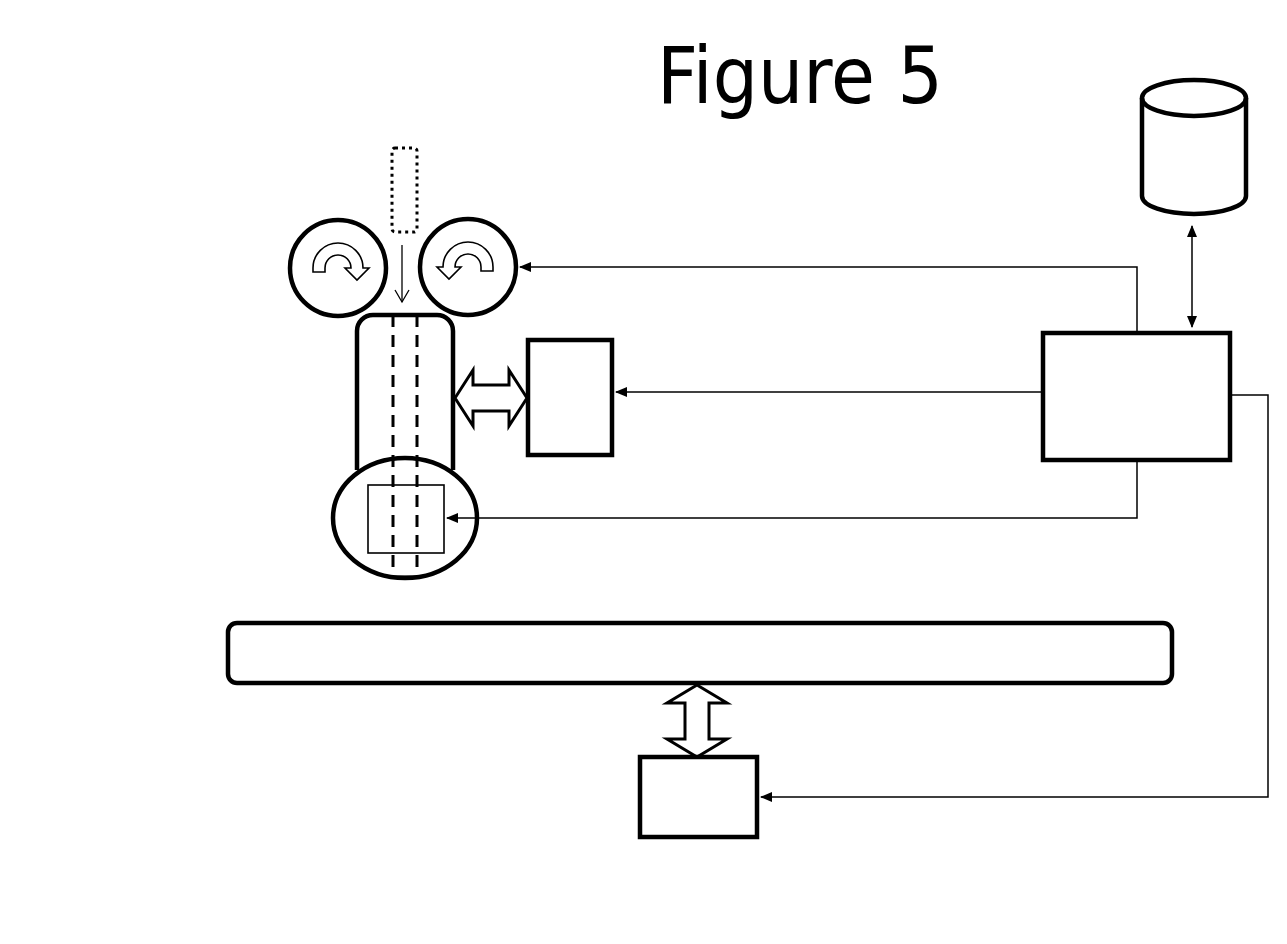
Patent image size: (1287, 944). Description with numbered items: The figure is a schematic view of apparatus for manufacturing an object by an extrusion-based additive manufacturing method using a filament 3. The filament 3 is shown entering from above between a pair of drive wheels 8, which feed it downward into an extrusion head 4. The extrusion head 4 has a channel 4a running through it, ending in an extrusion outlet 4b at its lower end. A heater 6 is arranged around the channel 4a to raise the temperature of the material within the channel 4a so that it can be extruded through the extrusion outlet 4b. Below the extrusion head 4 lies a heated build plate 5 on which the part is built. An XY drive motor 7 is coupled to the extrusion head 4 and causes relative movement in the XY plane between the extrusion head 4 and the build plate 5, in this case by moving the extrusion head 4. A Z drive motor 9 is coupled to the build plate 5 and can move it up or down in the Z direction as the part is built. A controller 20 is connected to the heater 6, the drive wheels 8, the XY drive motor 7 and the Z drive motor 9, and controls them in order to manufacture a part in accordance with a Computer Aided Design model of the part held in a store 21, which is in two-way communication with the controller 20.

The filament 3 is at (404, 195).
The extrusion head 4 is at (348, 502).
The channel 4a is at (405, 377).
The extrusion outlet 4b is at (407, 580).
The heated build plate 5 is at (245, 648).
The heater 6 is at (433, 542).
The XY drive motor 7 is at (533, 397).
The drive wheels 8 is at (312, 243).
The Z drive motor 9 is at (698, 761).
The controller 20 is at (857, 532).
The store 21 is at (1194, 203).